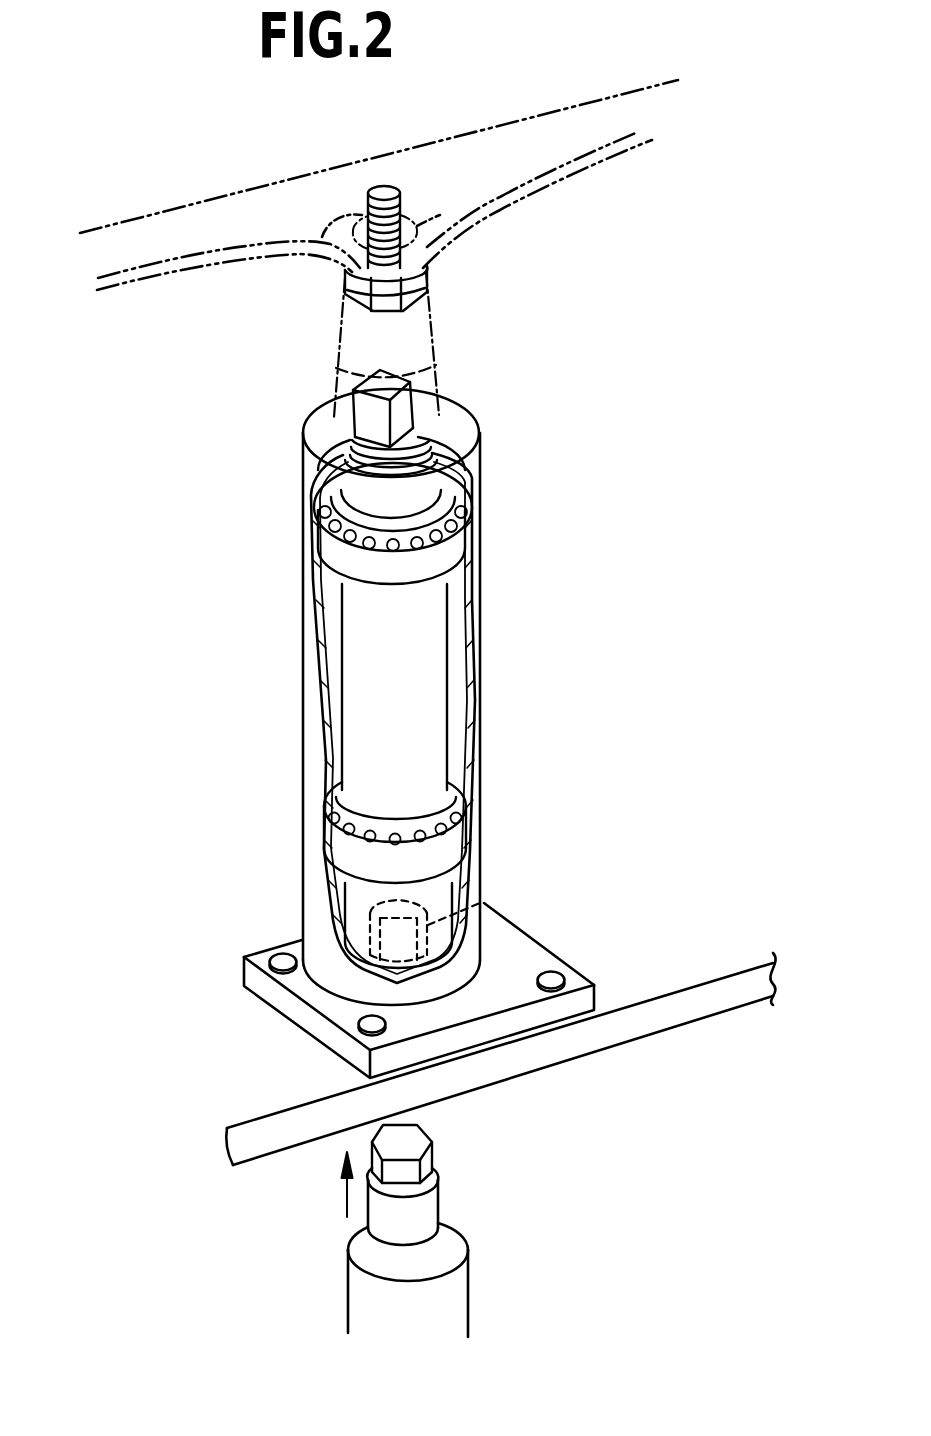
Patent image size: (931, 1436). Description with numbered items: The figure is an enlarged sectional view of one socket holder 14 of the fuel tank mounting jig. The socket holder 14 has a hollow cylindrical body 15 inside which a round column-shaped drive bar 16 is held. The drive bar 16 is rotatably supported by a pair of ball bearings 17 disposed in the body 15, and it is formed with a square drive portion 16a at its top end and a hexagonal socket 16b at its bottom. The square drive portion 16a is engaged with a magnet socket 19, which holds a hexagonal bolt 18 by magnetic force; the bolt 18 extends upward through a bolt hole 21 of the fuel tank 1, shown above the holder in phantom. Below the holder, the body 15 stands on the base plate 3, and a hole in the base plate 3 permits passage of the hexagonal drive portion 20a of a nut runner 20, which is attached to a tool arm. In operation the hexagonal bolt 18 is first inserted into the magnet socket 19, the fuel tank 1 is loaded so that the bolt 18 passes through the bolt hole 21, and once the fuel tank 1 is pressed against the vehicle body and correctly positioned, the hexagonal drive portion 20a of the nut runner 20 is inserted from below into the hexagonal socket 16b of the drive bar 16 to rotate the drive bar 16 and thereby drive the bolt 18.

The fuel tank 1 is at (620, 148).
The base plate 3 is at (765, 993).
The socket holder 14 is at (501, 659).
The hollow cylindrical body 15 is at (305, 660).
The drive bar 16 is at (410, 623).
The square drive portion 16a is at (403, 413).
The hexagonal socket 16b is at (486, 893).
The ball bearing 17 is at (327, 548).
The hexagonal bolt 18 is at (400, 203).
The magnet socket 19 is at (432, 307).
The nut runner 20 is at (449, 1293).
The hexagonal drive portion 20a is at (433, 1152).
The bolt hole 21 is at (330, 226).